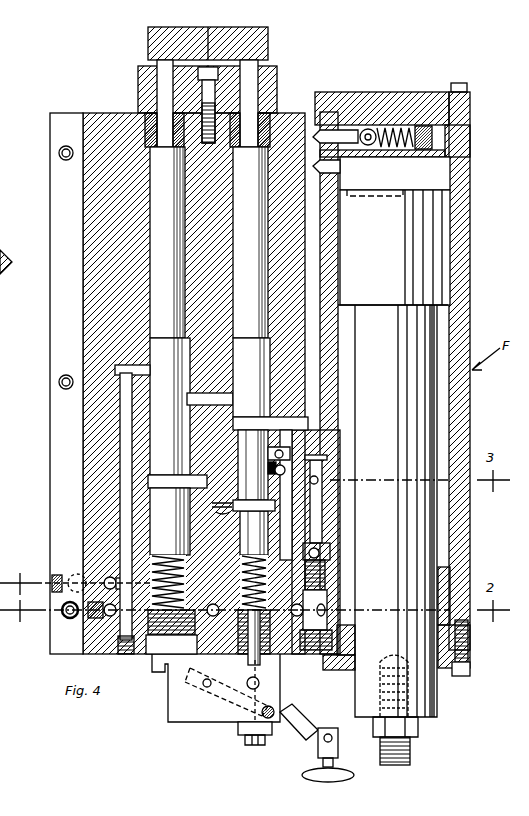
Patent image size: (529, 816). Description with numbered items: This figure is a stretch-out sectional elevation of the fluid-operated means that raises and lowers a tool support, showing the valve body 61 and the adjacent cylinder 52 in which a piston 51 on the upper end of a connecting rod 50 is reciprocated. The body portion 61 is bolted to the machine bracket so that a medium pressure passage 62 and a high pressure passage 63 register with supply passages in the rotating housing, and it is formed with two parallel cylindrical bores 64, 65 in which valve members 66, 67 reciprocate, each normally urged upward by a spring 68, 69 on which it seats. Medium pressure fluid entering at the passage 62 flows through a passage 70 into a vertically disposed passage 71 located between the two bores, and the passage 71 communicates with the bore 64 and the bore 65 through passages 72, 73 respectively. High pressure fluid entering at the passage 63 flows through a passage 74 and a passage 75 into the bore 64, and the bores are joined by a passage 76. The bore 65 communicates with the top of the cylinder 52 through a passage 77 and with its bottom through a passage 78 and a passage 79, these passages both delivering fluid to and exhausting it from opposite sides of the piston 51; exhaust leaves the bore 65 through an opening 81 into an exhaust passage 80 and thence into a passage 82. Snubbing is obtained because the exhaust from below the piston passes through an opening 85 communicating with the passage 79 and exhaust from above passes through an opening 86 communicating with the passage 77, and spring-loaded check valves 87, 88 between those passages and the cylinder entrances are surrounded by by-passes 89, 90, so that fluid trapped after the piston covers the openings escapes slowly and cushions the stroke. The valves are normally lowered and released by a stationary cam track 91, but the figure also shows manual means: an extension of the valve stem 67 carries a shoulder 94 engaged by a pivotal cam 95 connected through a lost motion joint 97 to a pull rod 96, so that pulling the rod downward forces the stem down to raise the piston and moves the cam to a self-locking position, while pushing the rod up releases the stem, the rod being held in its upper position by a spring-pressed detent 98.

The connecting rod 50 is at (420, 335).
The piston 51 is at (375, 300).
The cylinder 52 is at (466, 252).
The body portion 61 is at (62, 186).
The passage 62 is at (88, 620).
The passage 63 is at (70, 582).
The cylindrical bore 64 is at (150, 172).
The cylindrical bore 65 is at (275, 170).
The valve member 66 is at (158, 108).
The valve member 67 is at (260, 110).
The spring 68 is at (160, 560).
The spring 69 is at (248, 559).
The passage 70 is at (150, 638).
The vertically disposed passage 71 is at (190, 526).
The passage 72 is at (178, 491).
The passage 73 is at (262, 510).
The passage 74 is at (108, 578).
The passage 75 is at (122, 516).
The passage 76 is at (228, 400).
The passage 77 is at (328, 256).
The passage 78 is at (318, 481).
The passage 79 is at (322, 504).
The exhaust passage 80 is at (268, 468).
The opening 81 is at (268, 450).
The passage 82 is at (327, 610).
The opening 85 is at (330, 462).
The opening 86 is at (340, 166).
The spring-loaded check valve 87 is at (326, 570).
The spring-loaded check valve 88 is at (412, 150).
The by-pass 89 is at (330, 553).
The by-pass 90 is at (366, 128).
The stationary cam track 91 is at (208, 30).
The shoulder 94 is at (238, 727).
The pivotal cam 95 is at (226, 710).
The pull rod 96 is at (318, 745).
The lost motion joint 97 is at (274, 711).
The spring-pressed detent 98 is at (190, 684).